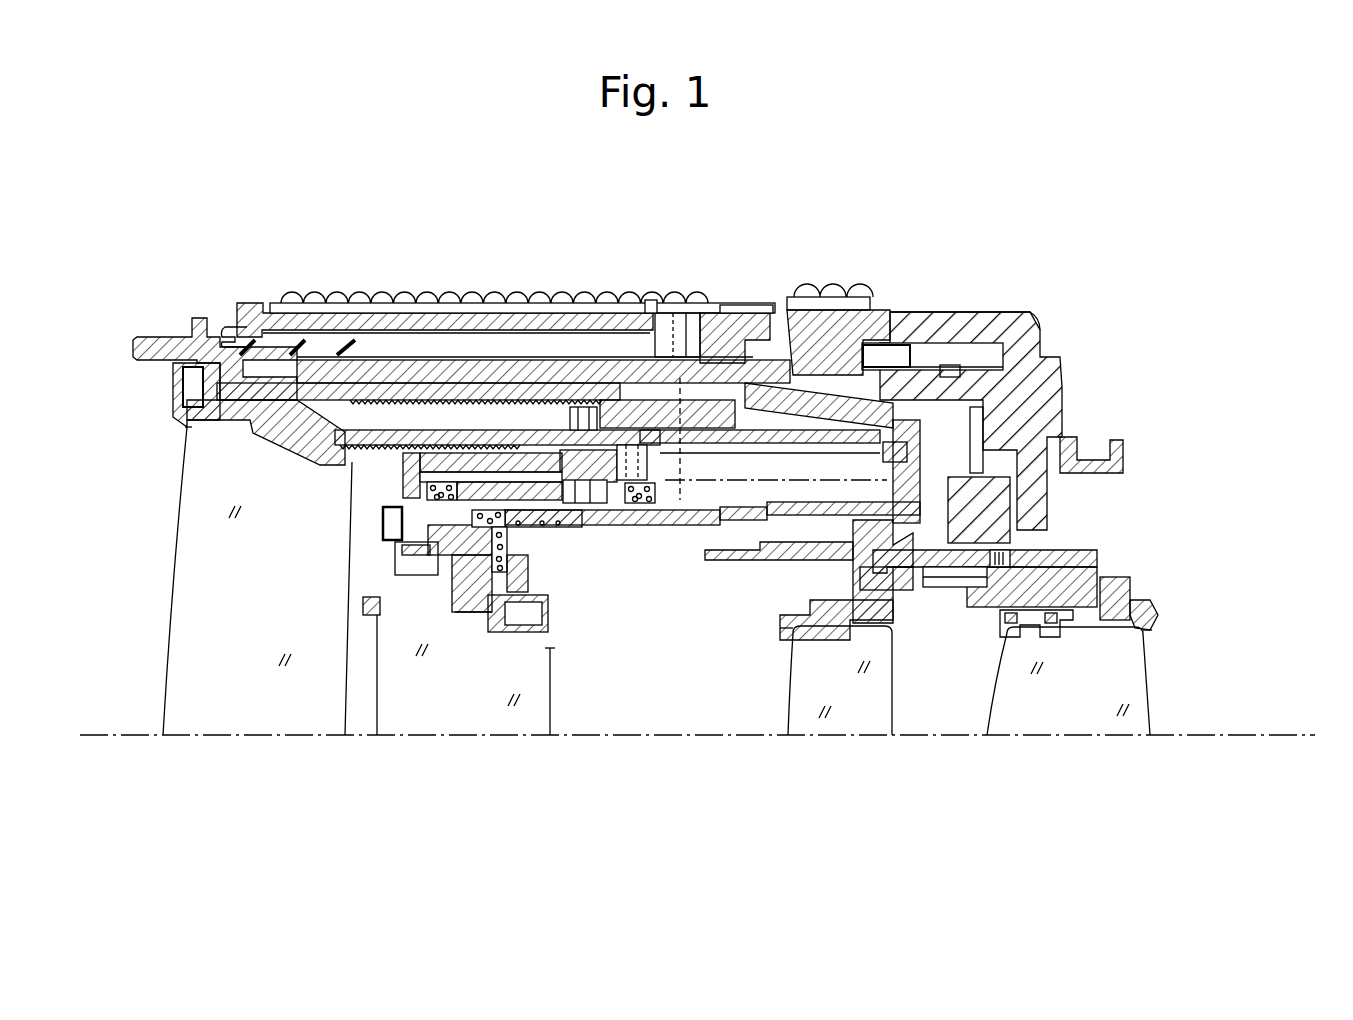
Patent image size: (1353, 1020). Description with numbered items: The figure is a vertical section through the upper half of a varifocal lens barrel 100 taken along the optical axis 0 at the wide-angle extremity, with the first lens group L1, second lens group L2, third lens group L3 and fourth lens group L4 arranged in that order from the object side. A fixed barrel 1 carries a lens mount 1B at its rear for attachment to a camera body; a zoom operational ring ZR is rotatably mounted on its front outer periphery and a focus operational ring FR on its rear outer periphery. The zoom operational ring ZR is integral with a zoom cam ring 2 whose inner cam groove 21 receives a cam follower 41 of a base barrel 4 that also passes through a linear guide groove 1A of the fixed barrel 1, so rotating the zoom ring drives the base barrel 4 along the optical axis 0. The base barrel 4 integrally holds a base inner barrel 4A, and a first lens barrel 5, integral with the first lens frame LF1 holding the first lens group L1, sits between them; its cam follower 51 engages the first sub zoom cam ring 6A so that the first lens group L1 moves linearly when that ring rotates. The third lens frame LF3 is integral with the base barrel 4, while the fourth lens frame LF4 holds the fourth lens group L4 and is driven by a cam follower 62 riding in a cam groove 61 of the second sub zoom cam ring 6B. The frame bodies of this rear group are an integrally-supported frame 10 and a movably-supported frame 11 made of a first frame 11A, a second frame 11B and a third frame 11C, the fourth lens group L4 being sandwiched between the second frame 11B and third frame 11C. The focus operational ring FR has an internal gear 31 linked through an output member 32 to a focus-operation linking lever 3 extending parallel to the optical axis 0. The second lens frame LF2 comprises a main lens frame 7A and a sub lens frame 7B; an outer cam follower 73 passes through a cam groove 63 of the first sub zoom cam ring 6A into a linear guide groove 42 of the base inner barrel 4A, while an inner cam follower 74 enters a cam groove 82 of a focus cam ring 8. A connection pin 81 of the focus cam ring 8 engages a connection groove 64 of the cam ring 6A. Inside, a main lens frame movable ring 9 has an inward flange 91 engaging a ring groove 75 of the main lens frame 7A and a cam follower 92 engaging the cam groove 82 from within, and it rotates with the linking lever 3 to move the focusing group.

The lens barrel 100 is at (395, 190).
The optical axis 0 is at (681, 737).
The fixed barrel 1 is at (253, 303).
The linear guide groove 1A is at (545, 343).
The lens mount 1B is at (1113, 440).
The zoom cam ring 2 is at (440, 318).
The zoom operational ring ZR is at (474, 300).
The focus-operation linking lever 3 is at (692, 510).
The base barrel 4 is at (350, 370).
The base inner barrel 4A is at (738, 305).
The cam follower 41 is at (688, 330).
The linear guide groove 42 is at (383, 420).
The first lens barrel 5 is at (317, 393).
The cam follower 51 is at (655, 440).
The first sub zoom cam ring 6A is at (423, 430).
The second sub zoom cam ring 6B is at (1070, 557).
The cam groove 61 is at (960, 565).
The cam follower 62 is at (1000, 570).
The cam groove 63 is at (577, 407).
The connection groove 64 is at (707, 552).
The main lens frame 7A is at (417, 500).
The sub lens frame 7B is at (450, 565).
The outer cam follower 73 is at (604, 395).
The inner cam follower 74 is at (567, 497).
The ring groove 75 is at (548, 618).
The focus cam ring 8 is at (447, 505).
The connection pin 81 is at (630, 497).
The cam groove 82 is at (507, 487).
The main lens frame movable ring 9 is at (517, 560).
The inward flange 91 is at (468, 575).
The cam follower 92 is at (597, 502).
The integrally-supported frame 10 is at (900, 595).
The movably-supported frame 11 is at (1129, 586).
The first frame 11A is at (1077, 568).
The second frame 11B is at (1125, 600).
The third frame 11C is at (1174, 615).
The cam groove 21 is at (653, 300).
The internal gear 31 is at (847, 362).
The output member 32 is at (940, 307).
The focus operational ring FR is at (833, 297).
The first lens group L1 is at (245, 720).
The second lens group L2 is at (460, 712).
The third lens group L3 is at (838, 720).
The fourth lens group L4 is at (1083, 718).
The first lens frame LF1 is at (185, 428).
The second lens frame LF2 is at (556, 650).
The third lens frame LF3 is at (782, 628).
The fourth lens frame LF4 is at (1150, 632).